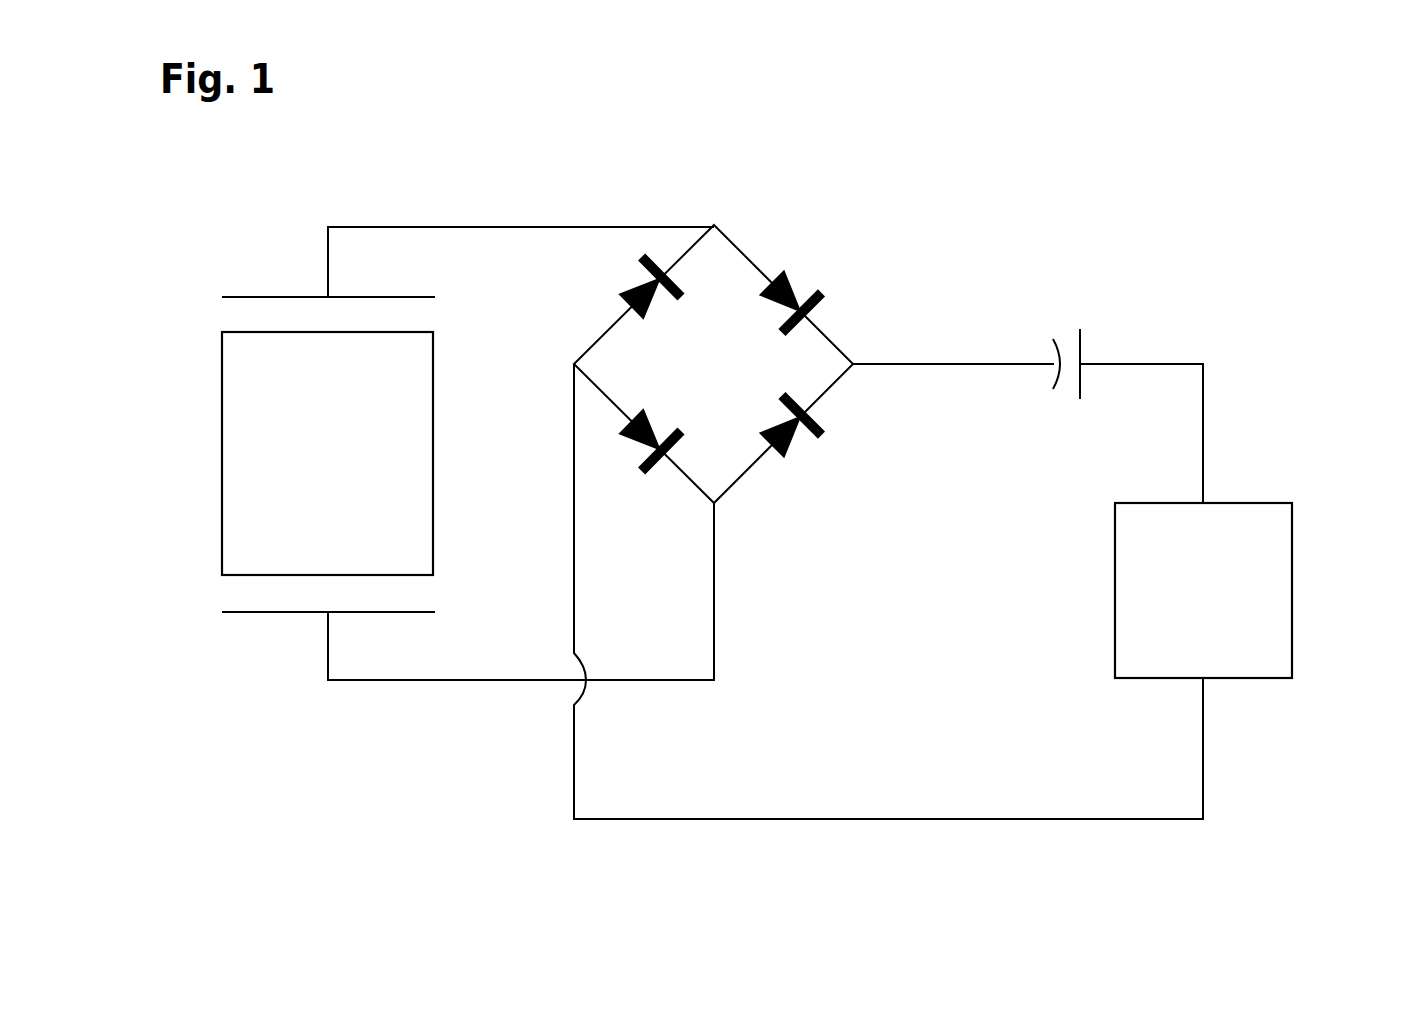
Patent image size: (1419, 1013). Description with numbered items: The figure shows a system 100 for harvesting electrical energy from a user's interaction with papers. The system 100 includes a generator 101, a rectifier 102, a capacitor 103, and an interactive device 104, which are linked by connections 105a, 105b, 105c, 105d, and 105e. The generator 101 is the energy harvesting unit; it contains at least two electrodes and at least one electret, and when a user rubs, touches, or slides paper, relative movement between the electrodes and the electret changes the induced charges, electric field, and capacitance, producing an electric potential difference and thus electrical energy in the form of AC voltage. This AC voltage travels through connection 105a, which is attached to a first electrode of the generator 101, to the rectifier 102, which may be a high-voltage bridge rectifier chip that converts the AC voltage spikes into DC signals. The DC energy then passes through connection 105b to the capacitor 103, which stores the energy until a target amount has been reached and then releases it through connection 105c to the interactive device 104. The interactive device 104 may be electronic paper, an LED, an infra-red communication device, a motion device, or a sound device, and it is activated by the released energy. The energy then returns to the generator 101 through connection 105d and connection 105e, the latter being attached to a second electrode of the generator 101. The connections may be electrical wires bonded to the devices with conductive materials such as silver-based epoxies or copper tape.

The system 100 is at (1348, 94).
The generator 101 is at (402, 462).
The rectifier 102 is at (811, 232).
The capacitor 103 is at (1091, 302).
The interactive device 104 is at (1261, 616).
The connection 105a is at (424, 214).
The connection 105b is at (928, 381).
The connection 105c is at (1216, 422).
The connection 105d is at (967, 811).
The connection 105e is at (352, 692).